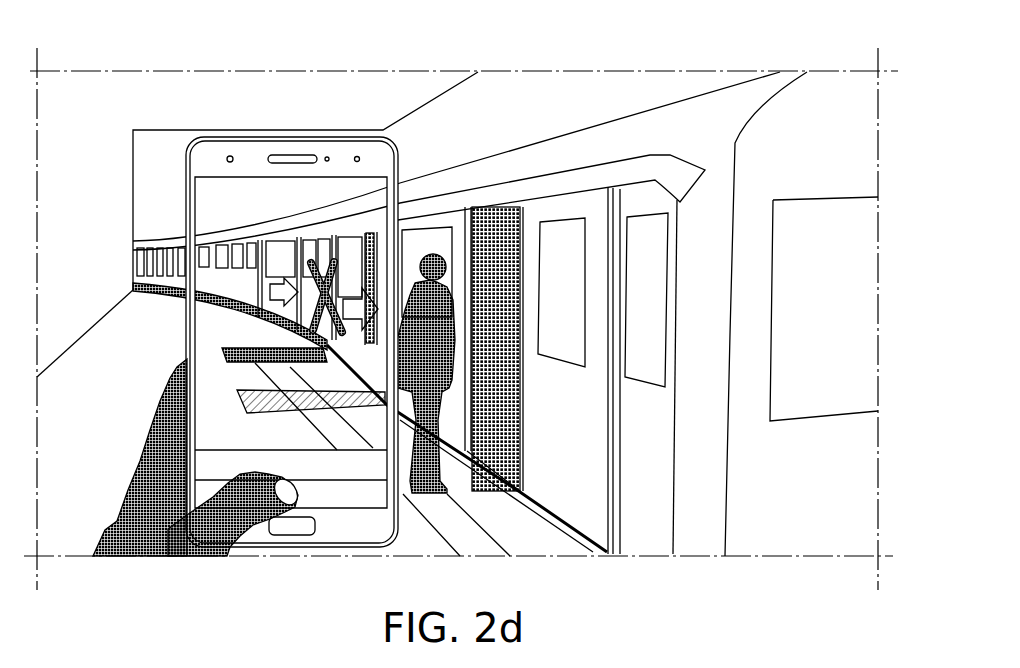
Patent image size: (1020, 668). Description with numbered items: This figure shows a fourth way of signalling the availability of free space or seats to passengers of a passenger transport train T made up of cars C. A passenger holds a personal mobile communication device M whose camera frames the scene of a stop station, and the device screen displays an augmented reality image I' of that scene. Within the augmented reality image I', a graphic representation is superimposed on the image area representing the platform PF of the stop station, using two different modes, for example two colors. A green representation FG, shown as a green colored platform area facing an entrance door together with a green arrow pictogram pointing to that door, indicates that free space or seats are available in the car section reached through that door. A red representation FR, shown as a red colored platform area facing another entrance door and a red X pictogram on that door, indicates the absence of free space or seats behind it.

The passenger transport train T is at (158, 232).
The car C is at (665, 140).
The platform PF is at (87, 467).
The personal mobile communication device M is at (187, 452).
The augmented reality image I' is at (292, 383).
The green graphic representation FG is at (328, 587).
The red graphic representation FR is at (332, 262).